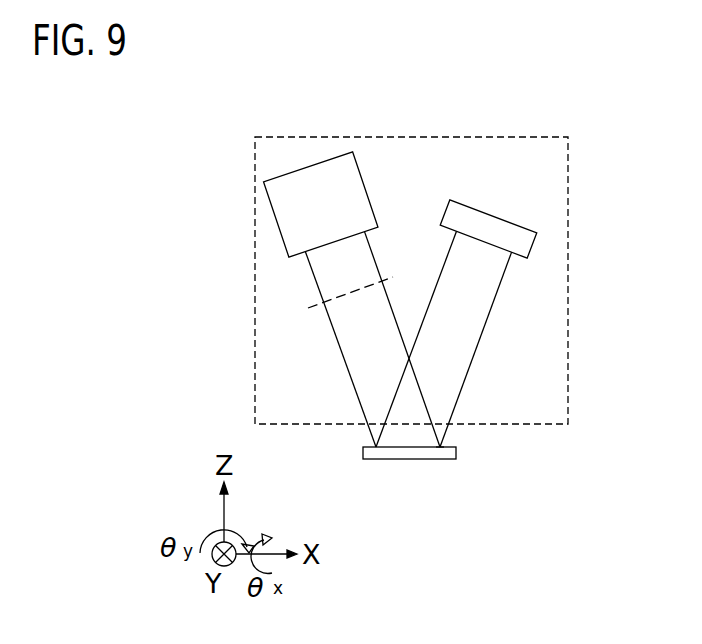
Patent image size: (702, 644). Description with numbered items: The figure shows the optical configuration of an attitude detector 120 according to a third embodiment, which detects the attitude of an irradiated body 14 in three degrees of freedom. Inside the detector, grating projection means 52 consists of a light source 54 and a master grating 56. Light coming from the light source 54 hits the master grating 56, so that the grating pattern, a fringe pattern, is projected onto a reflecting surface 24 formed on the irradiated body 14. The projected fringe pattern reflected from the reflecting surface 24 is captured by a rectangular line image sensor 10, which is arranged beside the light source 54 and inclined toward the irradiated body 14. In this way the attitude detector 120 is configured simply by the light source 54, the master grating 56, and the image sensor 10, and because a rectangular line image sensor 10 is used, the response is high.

The attitude detector 120 is at (462, 137).
The light source 54 is at (274, 216).
The grating projection means 52 is at (282, 284).
The master grating 56 is at (376, 280).
The rectangular line image sensor 10 is at (495, 227).
The irradiated body 14 is at (410, 453).
The reflecting surface 24 is at (424, 447).